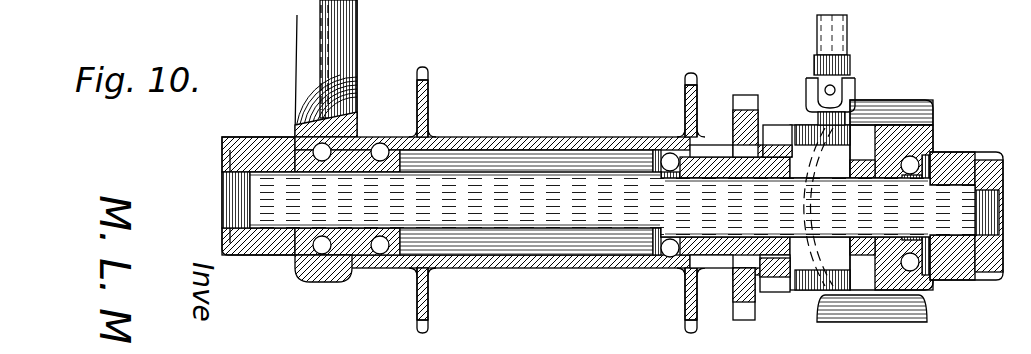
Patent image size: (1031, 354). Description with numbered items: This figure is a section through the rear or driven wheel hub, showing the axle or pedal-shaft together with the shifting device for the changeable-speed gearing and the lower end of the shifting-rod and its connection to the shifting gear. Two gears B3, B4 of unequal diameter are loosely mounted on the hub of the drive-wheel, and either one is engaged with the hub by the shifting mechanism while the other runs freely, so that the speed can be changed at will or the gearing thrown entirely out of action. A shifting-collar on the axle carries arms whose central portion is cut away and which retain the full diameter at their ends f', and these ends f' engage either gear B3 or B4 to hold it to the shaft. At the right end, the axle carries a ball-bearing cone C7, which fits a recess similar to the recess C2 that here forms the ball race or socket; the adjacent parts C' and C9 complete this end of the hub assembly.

The recess C2 is at (838, 70).
The clutch block C' is at (875, 201).
The ball-bearing cone C7 is at (932, 277).
The adjusting nut C9 is at (965, 292).
The gear B3 is at (743, 310).
The gear B4 is at (780, 293).
The full-diameter end of shifting arm f' is at (612, 204).